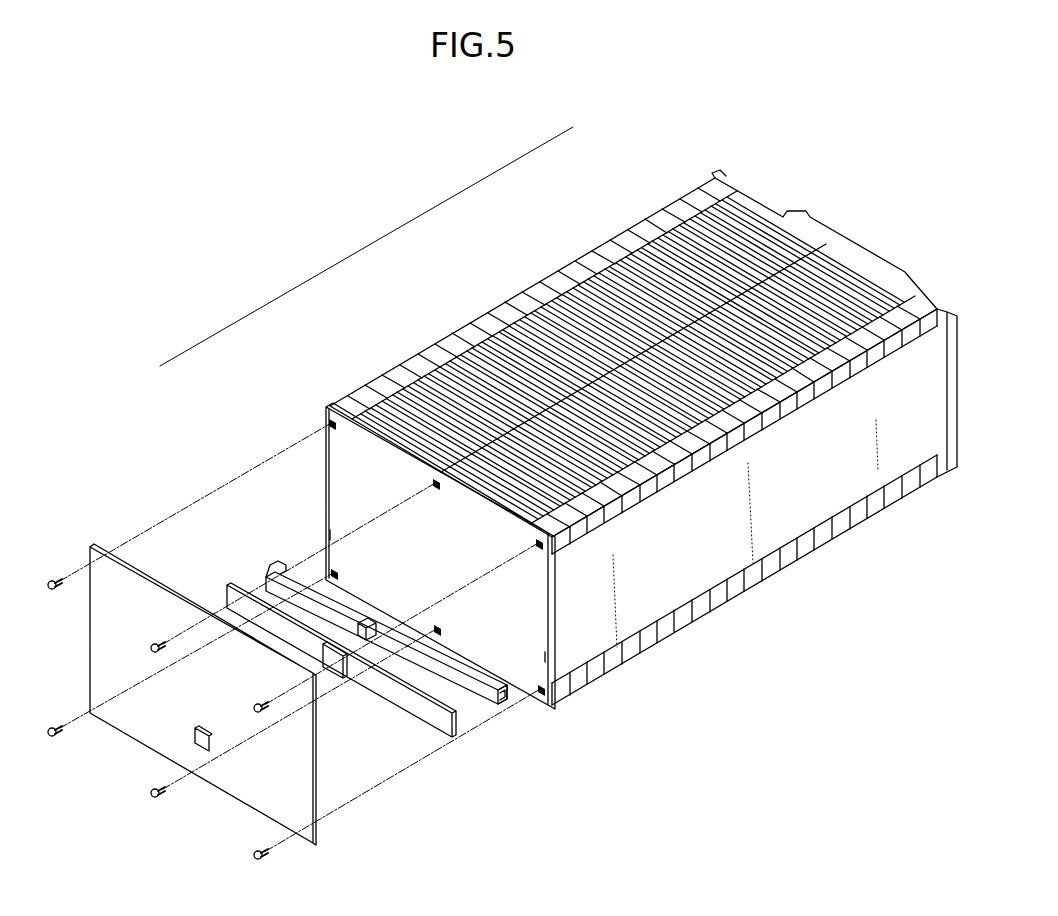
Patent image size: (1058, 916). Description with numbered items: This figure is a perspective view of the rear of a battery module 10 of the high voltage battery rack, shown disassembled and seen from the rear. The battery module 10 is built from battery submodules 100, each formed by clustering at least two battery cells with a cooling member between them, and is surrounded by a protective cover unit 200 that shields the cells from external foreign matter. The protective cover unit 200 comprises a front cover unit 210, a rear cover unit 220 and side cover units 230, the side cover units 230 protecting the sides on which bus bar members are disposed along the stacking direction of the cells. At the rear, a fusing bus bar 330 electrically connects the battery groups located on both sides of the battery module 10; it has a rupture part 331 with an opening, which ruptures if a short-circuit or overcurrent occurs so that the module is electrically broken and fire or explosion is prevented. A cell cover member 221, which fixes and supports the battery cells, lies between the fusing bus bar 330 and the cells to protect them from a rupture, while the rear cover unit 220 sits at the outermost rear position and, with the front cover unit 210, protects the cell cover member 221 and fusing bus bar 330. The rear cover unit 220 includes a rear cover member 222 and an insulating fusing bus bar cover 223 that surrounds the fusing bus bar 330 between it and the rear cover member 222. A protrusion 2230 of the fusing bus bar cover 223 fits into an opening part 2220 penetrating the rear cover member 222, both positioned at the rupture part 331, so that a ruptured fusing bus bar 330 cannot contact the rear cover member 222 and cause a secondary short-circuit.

The battery module 10 is at (80, 119).
The battery submodule 100 is at (788, 230).
The protective cover unit 200 is at (372, 247).
The front cover unit 210 is at (712, 183).
The rear cover unit 220 is at (270, 417).
The cell cover member 221 is at (327, 477).
The rear cover member 222 is at (128, 590).
The opening part 2220 is at (192, 737).
The fusing bus bar cover 223 is at (243, 603).
The protrusion 2230 is at (330, 668).
The side cover unit 230 is at (487, 313).
The fusing bus bar 330 is at (502, 703).
The rupture part 331 is at (366, 641).